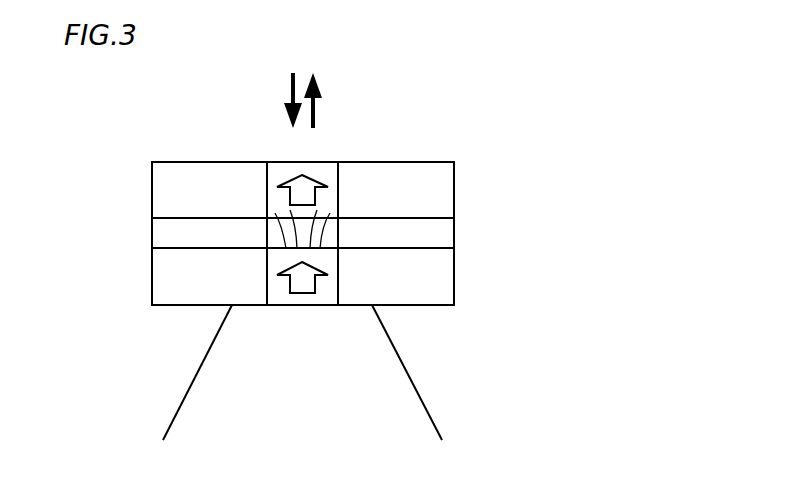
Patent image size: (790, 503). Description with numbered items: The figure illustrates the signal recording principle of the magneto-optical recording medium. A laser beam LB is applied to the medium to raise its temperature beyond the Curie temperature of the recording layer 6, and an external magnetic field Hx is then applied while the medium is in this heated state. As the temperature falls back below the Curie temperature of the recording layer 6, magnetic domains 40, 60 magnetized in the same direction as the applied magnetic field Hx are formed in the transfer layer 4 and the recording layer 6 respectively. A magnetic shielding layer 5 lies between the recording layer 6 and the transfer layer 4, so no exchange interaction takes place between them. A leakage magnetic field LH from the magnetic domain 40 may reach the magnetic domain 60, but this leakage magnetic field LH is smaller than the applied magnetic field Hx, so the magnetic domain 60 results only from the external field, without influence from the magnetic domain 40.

The transfer layer 4 is at (449, 286).
The magnetic shielding layer 5 is at (449, 233).
The recording layer 6 is at (449, 180).
The magnetic domain 40 is at (323, 298).
The magnetic domain 60 is at (277, 170).
The magnetic field Hx is at (316, 113).
The leakage magnetic field LH is at (282, 236).
The laser beam LB is at (392, 368).